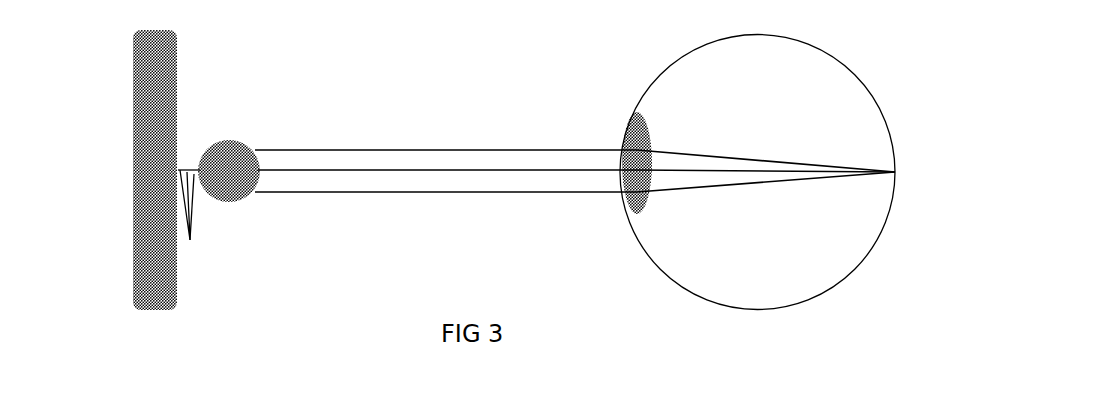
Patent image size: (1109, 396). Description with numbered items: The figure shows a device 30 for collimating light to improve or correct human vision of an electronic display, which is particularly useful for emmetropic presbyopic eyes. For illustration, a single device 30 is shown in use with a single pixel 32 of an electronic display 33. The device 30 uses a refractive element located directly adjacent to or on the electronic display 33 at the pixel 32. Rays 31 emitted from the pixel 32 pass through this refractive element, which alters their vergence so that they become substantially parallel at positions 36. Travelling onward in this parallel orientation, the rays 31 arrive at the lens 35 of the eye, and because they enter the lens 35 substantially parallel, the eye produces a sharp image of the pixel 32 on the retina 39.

The device 30 is at (243, 207).
The rays 31 is at (194, 223).
The pixel 32 is at (179, 169).
The electronic display 33 is at (145, 172).
The lens of the eye 35 is at (642, 215).
The positions 36 is at (443, 150).
The retina 39 is at (895, 172).